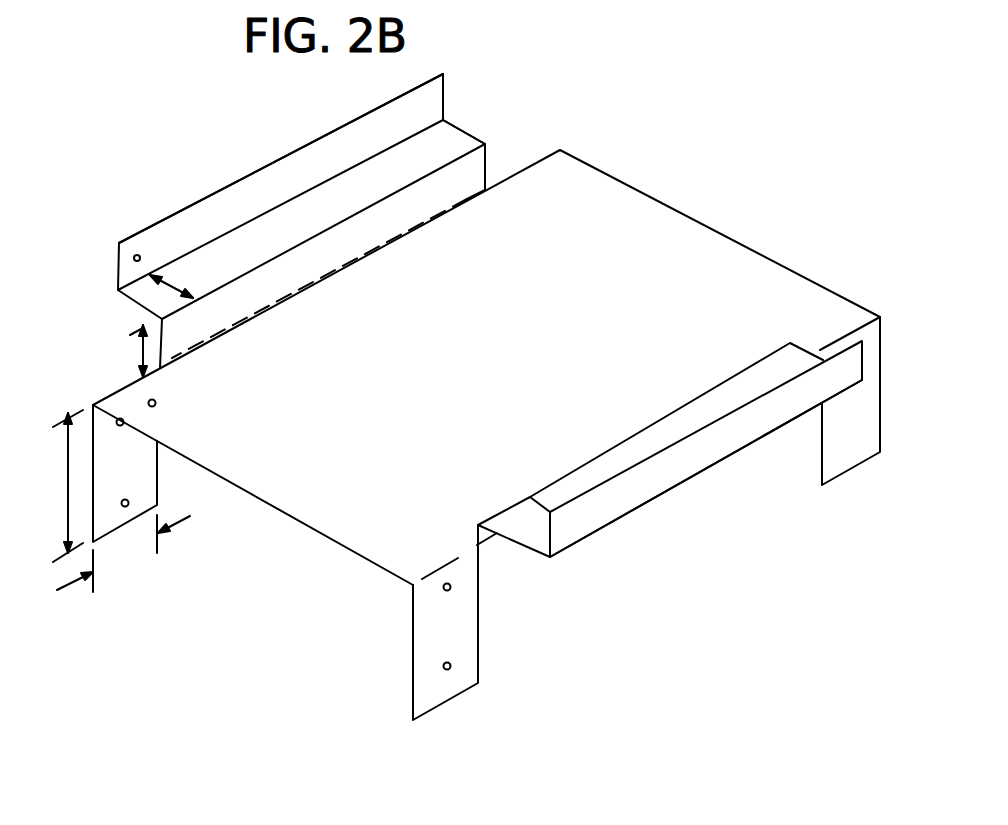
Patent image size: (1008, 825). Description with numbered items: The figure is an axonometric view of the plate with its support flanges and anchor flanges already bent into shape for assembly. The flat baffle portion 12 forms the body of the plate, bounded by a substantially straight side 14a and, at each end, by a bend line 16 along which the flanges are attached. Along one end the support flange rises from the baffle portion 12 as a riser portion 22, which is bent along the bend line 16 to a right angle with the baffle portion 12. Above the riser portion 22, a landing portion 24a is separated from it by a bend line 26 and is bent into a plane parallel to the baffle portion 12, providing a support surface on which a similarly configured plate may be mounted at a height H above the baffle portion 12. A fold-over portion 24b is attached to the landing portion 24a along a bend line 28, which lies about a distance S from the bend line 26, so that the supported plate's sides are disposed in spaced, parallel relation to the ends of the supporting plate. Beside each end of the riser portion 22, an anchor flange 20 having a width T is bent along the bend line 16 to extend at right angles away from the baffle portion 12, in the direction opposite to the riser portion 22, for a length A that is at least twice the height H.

The baffle portion 12 is at (502, 323).
The side 14a is at (360, 555).
The bend line 16 is at (476, 222).
The anchor flange 20 is at (142, 473).
The riser portion 22 is at (298, 290).
The landing portion 24a is at (288, 253).
The fold-over portion 24b is at (290, 170).
The bend line 26 is at (460, 146).
The bend line 28 is at (200, 245).
The anchor flange length A is at (68, 488).
The height H is at (140, 360).
The distance S is at (140, 302).
The width T is at (130, 553).